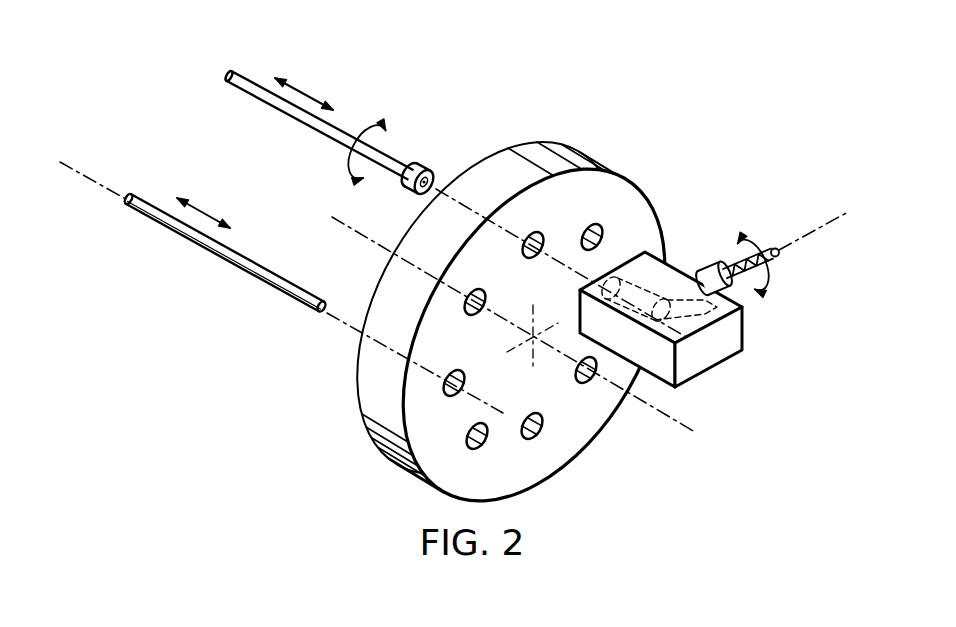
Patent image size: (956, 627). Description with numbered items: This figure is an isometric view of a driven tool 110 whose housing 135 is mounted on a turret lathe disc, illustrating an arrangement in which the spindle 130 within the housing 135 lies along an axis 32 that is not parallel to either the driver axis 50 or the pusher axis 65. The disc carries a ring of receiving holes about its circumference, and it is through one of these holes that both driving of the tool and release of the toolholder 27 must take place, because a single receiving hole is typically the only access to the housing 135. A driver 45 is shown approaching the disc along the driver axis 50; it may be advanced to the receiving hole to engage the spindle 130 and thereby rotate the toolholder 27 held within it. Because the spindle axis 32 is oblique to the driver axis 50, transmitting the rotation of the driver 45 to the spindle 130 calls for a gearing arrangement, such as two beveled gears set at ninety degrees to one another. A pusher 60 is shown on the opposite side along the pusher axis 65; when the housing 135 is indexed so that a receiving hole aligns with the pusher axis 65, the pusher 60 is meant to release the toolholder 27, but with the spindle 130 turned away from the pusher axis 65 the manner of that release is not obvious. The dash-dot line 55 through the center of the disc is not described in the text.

The toolholder 27 is at (757, 298).
The spindle axis 32 is at (800, 236).
The driver 45 is at (246, 77).
The driver axis 50 is at (455, 198).
The disc axis 55 is at (656, 413).
The pusher 60 is at (207, 253).
The pusher axis 65 is at (87, 174).
The driven tool 110 is at (704, 258).
The spindle 130 is at (722, 322).
The driven tool housing 135 is at (713, 356).